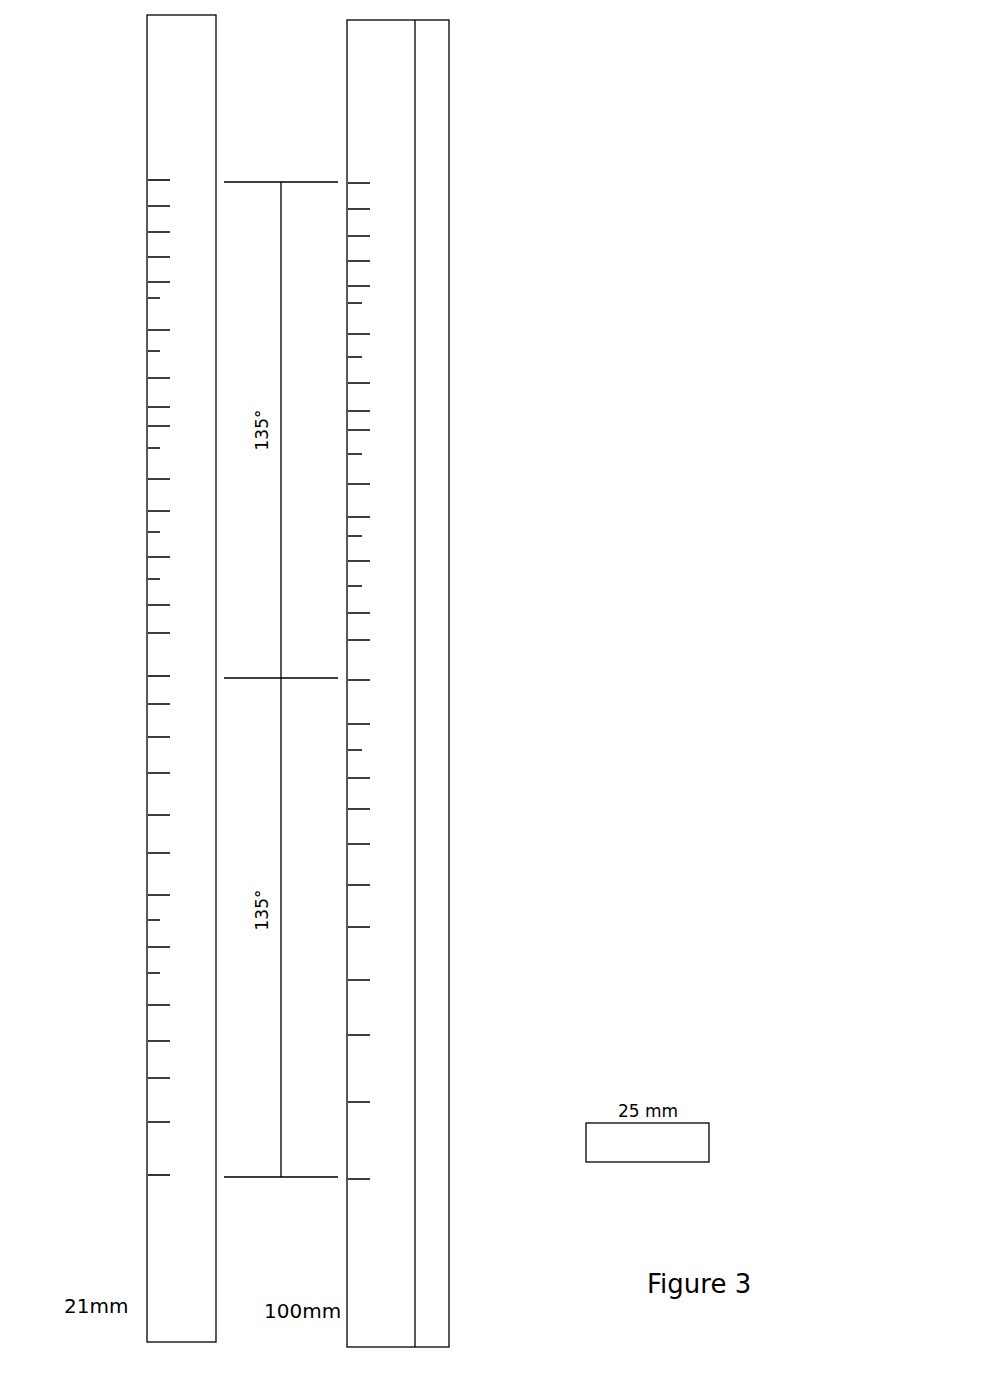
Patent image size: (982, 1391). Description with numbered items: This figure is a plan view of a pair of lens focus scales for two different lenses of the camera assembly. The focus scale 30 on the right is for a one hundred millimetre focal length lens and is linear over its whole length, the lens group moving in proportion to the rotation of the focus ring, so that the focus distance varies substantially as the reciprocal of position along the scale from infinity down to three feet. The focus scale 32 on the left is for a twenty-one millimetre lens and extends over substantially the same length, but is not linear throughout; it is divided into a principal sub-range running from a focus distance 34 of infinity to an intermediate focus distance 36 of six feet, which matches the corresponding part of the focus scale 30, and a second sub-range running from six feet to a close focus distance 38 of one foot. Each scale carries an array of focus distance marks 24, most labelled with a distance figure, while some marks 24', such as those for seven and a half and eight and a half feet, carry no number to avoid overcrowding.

The focus scale 30 is at (393, 87).
The focus scale 32 is at (136, 678).
The focus distance 34 is at (147, 177).
The intermediate focus distance 36 is at (147, 676).
The close focus distance 38 is at (147, 1175).
The focus distance marks 24 is at (307, 825).
The focus distance marks 24' is at (452, 557).